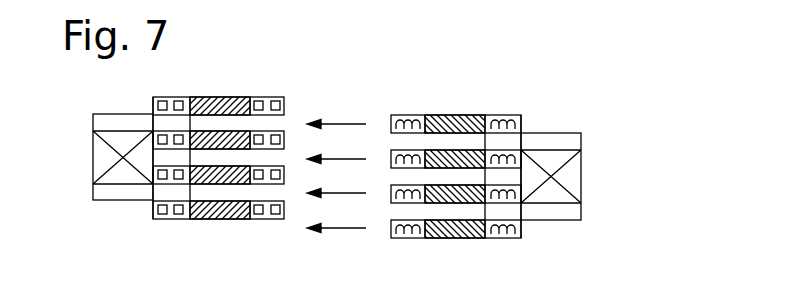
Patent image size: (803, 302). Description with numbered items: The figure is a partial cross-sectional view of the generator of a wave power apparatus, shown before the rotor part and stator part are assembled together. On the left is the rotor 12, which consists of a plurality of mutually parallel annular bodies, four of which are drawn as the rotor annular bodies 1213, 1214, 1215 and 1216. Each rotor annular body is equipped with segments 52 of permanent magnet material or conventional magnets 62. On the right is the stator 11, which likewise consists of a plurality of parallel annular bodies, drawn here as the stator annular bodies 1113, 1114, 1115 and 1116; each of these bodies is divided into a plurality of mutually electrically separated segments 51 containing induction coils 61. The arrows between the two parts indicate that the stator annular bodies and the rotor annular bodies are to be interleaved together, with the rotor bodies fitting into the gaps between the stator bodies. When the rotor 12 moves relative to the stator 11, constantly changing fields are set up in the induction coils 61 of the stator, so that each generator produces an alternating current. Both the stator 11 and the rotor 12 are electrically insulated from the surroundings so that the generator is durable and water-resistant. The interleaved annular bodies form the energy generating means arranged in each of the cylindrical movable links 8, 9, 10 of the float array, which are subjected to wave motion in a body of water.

The rotor 12 is at (209, 65).
The rotor annular body 1213 is at (153, 100).
The rotor annular body 1214 is at (153, 138).
The rotor annular body 1215 is at (153, 178).
The rotor annular body 1216 is at (153, 219).
The segments of permanent magnet material 52 is at (178, 97).
The magnets 62 is at (283, 97).
The stator 11 is at (449, 76).
The stator annular body 1113 is at (521, 123).
The stator annular body 1114 is at (521, 158).
The stator annular body 1115 is at (521, 203).
The stator annular body 1116 is at (521, 234).
The segments 51 is at (408, 115).
The induction coils 61 is at (407, 238).
The movable link 8 is at (644, 198).
The movable link 9 is at (644, 198).
The movable link 10 is at (650, 240).